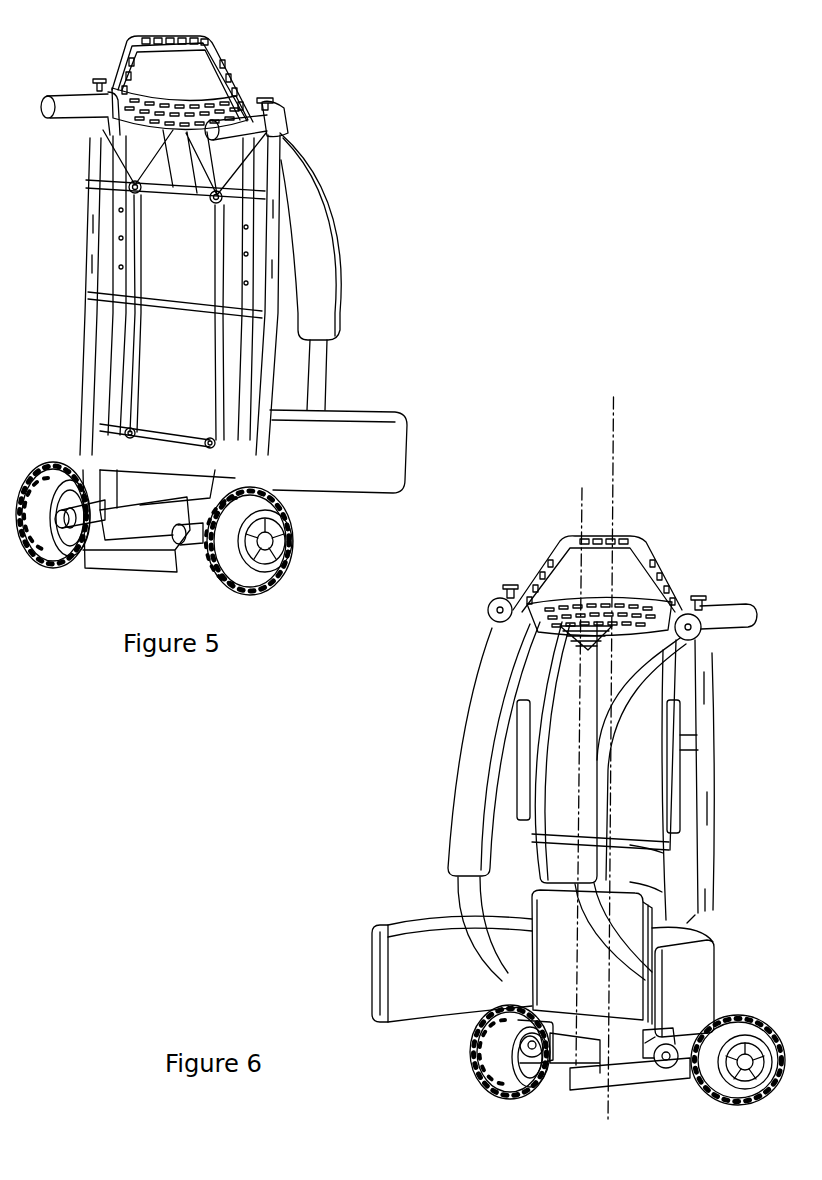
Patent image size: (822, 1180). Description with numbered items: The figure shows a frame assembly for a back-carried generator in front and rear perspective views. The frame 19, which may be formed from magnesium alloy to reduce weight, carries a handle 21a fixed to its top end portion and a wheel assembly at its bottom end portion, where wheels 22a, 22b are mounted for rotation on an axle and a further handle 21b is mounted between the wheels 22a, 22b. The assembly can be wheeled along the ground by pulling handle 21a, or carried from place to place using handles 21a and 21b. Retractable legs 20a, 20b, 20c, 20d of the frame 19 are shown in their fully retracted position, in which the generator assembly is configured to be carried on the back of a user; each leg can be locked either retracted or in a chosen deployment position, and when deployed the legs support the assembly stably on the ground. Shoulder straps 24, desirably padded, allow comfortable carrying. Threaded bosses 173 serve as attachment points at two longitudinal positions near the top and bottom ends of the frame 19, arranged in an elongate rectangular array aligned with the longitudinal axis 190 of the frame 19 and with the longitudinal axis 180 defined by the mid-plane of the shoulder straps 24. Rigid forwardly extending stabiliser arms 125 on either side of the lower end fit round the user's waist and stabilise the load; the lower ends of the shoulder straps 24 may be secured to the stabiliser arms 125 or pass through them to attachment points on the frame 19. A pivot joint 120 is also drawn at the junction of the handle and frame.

In FIG. 5, the frame 19 is at (270, 154).
In FIG. 6, the frame 19 is at (498, 593).
In FIG. 5, the retractable leg 20a is at (245, 121).
In FIG. 6, the retractable leg 20a is at (727, 603).
In FIG. 5, the retractable leg 20b is at (68, 95).
In FIG. 5, the retractable leg 20c is at (103, 523).
In FIG. 6, the retractable leg 20c is at (557, 1060).
In FIG. 5, the retractable leg 20d is at (197, 547).
In FIG. 5, the handle 21a is at (213, 44).
In FIG. 6, the handle 21a is at (626, 540).
In FIG. 5, the handle 21b is at (112, 576).
In FIG. 6, the handle 21b is at (621, 1092).
In FIG. 5, the wheel 22a is at (23, 558).
In FIG. 6, the wheel 22a is at (482, 1075).
In FIG. 5, the wheel 22b is at (292, 560).
In FIG. 6, the wheel 22b is at (757, 1018).
In FIG. 5, the shoulder straps 24 is at (332, 224).
In FIG. 6, the shoulder straps 24 is at (560, 782).
In FIG. 6, the pivot joint 120 is at (490, 604).
In FIG. 5, the stabiliser arms 125 is at (348, 408).
In FIG. 6, the stabiliser arms 125 is at (393, 924).
In FIG. 5, the threaded bosses 173 is at (216, 203).
In FIG. 6, the longitudinal axis 180 is at (581, 522).
In FIG. 6, the longitudinal axis 190 is at (612, 430).